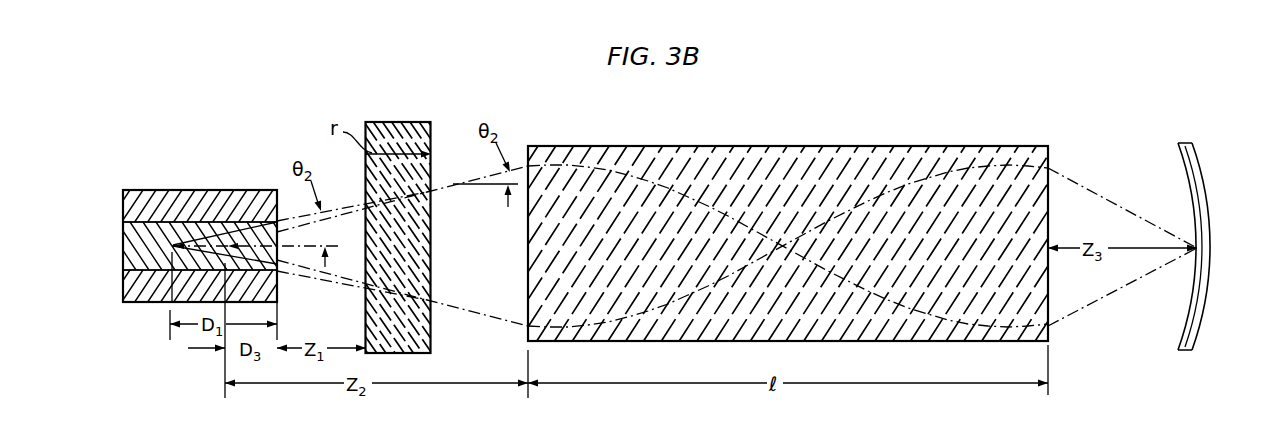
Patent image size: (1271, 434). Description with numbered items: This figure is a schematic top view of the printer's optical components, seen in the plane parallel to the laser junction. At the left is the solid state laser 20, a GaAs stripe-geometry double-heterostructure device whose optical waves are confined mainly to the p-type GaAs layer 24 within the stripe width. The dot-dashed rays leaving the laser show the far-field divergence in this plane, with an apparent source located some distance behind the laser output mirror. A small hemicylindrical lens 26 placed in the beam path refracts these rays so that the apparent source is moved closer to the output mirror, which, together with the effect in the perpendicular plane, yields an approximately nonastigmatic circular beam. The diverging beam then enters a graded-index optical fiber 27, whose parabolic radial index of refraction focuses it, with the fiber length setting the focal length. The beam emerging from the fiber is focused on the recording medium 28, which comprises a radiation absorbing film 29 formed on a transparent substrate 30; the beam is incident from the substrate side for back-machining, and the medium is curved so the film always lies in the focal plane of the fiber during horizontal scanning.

The solid state laser 20 is at (175, 171).
The p-type GaAs layer 24 is at (123, 247).
The hemicylindrical lens 26 is at (395, 122).
The optical fiber 27 is at (783, 160).
The recording medium 28 is at (1194, 229).
The radiation absorbing film 29 is at (1203, 197).
The transparent substrate 30 is at (1193, 178).